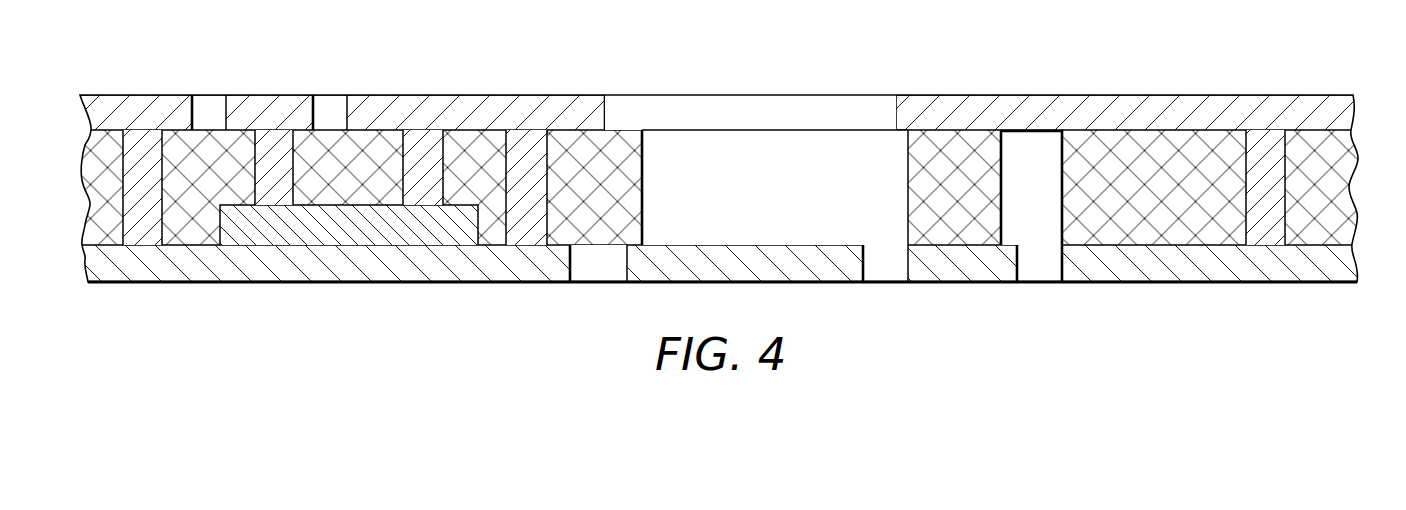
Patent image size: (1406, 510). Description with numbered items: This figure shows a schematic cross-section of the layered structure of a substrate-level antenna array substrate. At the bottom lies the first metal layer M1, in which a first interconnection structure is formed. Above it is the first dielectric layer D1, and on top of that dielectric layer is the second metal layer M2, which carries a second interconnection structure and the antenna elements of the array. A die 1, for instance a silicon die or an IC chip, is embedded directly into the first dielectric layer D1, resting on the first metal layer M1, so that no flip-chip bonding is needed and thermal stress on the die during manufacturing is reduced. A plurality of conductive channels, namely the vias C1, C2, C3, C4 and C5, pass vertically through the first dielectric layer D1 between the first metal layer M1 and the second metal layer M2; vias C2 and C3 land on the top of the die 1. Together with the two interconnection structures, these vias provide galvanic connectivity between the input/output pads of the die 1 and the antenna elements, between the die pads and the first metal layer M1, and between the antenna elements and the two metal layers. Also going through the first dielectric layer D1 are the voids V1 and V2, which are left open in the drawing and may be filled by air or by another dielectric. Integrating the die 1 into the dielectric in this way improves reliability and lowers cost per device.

The first metal layer M1 is at (152, 270).
The second metal layer M2 is at (128, 106).
The conductive channel (via) C1 is at (132, 189).
The conductive channel (via) C2 is at (273, 142).
The conductive channel (via) C3 is at (423, 142).
The conductive channel (via) C4 is at (527, 142).
The conductive channel (via) C5 is at (1266, 158).
The void V1 is at (774, 160).
The void V2 is at (1030, 160).
The first dielectric layer D1 is at (1328, 188).
The die die 1 is at (348, 232).